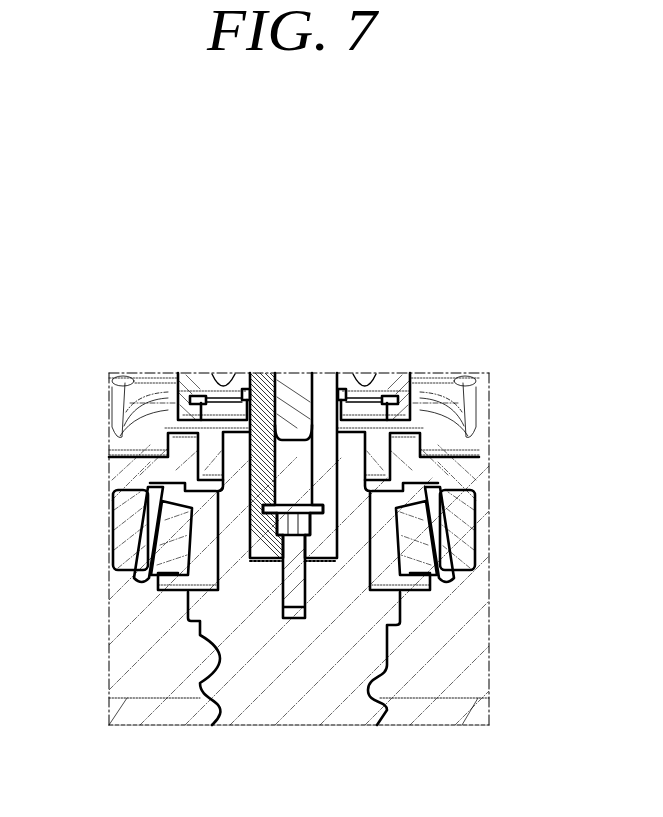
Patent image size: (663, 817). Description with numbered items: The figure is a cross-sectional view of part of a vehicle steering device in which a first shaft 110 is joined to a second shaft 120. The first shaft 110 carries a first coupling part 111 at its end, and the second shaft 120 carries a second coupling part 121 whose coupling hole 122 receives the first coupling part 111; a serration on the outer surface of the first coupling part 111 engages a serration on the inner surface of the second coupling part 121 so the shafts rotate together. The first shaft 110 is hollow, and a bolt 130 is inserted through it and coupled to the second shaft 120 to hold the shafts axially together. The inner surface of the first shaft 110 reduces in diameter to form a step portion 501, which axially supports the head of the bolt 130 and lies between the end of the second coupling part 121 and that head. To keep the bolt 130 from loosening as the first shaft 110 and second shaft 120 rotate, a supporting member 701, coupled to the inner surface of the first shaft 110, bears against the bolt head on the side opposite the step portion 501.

The first shaft 110 is at (328, 378).
The first coupling part 111 is at (358, 385).
The second shaft 120 is at (275, 718).
The second coupling part 121 is at (362, 521).
The coupling hole 122 is at (253, 470).
The bolt 130 is at (300, 595).
The step portion 501 is at (252, 543).
The supporting member 701 is at (283, 503).